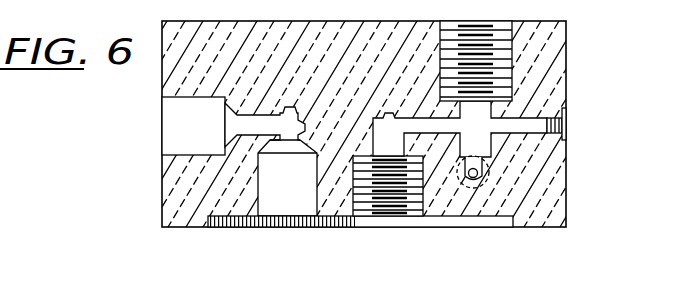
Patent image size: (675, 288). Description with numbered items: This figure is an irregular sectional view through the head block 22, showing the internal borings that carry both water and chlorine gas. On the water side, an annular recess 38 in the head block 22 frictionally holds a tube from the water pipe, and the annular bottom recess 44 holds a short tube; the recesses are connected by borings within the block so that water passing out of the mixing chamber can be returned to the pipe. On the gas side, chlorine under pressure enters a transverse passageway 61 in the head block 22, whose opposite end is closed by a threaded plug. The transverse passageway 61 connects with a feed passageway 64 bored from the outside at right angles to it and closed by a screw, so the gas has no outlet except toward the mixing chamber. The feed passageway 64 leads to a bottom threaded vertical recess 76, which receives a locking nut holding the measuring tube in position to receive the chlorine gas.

The head block 22 is at (567, 88).
The annular recess 38 is at (177, 138).
The annular bottom recess 44 is at (293, 204).
The transverse passageway 61 is at (479, 171).
The feed passageway 64 is at (429, 122).
The bottom threaded vertical recess 76 is at (426, 217).